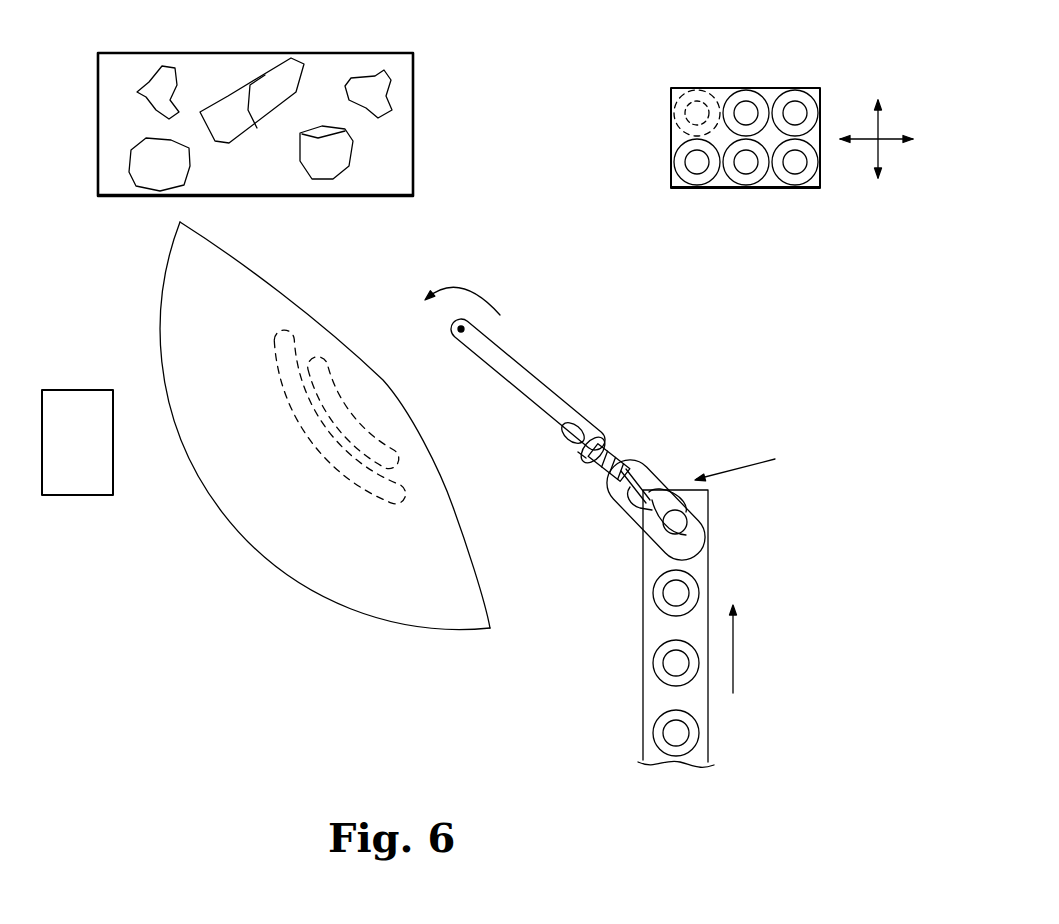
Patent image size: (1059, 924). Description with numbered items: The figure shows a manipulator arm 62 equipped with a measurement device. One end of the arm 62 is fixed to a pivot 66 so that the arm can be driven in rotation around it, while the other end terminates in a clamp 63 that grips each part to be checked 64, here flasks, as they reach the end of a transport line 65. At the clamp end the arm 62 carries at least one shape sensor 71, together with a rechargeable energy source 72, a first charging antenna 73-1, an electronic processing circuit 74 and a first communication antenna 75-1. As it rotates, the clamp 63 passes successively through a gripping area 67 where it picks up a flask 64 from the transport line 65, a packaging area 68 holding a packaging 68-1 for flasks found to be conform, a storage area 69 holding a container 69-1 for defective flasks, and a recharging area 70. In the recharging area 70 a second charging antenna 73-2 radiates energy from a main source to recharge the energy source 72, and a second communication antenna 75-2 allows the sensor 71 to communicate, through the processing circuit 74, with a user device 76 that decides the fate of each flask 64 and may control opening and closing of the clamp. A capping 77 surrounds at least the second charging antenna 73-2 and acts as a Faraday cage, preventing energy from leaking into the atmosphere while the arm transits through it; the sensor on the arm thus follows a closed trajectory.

The manipulator arm 62 is at (510, 372).
The clamp 63 is at (625, 500).
The part to be checked 64 is at (300, 172).
The transport line 65 is at (708, 575).
The pivot 66 is at (477, 322).
The gripping area 67 is at (751, 460).
The packaging area 68 is at (658, 155).
The packaging 68-1 is at (718, 188).
The storage area 69 is at (424, 158).
The container 69-1 is at (383, 197).
The recharging area 70 is at (301, 595).
The shape sensor 71 is at (633, 462).
The rechargeable energy source 72 is at (615, 467).
The first charging antenna 73-1 is at (602, 437).
The second charging antenna 73-2 is at (367, 488).
The electronic processing circuit 74 is at (592, 472).
The first communication antenna 75-1 is at (572, 443).
The second communication antenna 75-2 is at (365, 432).
The user device 76 is at (70, 400).
The capping 77 is at (392, 595).